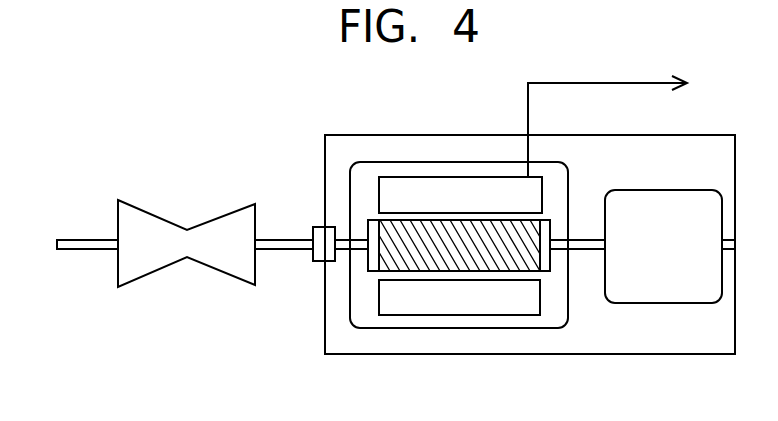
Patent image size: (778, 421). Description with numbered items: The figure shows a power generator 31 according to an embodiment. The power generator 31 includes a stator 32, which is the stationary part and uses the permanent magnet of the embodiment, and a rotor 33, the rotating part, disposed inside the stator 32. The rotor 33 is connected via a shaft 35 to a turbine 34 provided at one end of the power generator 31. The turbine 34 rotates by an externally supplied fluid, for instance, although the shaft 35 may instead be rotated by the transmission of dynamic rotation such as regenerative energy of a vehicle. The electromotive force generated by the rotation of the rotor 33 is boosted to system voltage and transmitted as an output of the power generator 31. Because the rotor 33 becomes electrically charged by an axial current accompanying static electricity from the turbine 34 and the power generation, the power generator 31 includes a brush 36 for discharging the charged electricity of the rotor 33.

The power generator 31 is at (367, 133).
The stator 32 is at (430, 305).
The rotor 33 is at (472, 265).
The turbine 34 is at (228, 213).
The shaft 35 is at (291, 250).
The brush 36 is at (655, 290).